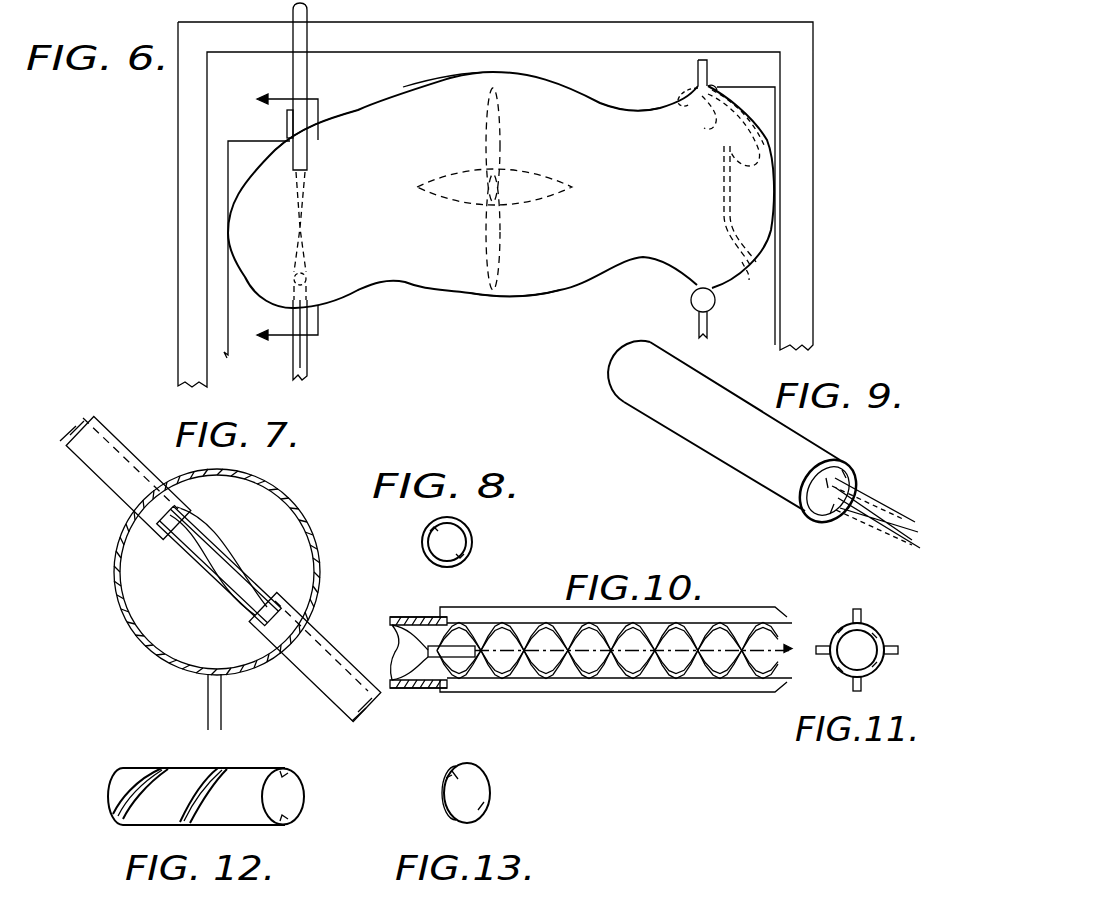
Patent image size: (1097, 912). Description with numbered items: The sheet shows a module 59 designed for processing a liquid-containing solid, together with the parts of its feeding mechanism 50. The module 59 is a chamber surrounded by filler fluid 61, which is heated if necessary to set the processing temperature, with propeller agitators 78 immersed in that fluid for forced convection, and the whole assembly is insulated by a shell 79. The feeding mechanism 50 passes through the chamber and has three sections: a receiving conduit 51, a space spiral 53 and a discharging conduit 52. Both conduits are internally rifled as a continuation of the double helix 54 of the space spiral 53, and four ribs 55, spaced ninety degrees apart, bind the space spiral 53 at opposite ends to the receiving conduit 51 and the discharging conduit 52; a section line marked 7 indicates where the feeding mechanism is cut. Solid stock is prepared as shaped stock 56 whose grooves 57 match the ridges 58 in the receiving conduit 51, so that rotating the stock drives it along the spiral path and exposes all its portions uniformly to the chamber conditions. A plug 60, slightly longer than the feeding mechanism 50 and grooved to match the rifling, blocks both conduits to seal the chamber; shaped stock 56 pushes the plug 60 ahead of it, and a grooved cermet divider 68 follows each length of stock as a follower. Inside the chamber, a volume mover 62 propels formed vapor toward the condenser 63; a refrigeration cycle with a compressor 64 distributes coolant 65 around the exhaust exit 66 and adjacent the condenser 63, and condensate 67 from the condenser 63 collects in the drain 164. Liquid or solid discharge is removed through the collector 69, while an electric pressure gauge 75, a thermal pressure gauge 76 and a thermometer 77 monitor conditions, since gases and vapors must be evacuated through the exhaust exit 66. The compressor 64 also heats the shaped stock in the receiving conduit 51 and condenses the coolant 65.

In FIG. 6, the section line 7- 7 is at (295, 226).
In FIG. 7, the feeding mechanism 50 is at (132, 446).
In FIG. 6, the receiving conduit 51 is at (292, 70).
In FIG. 7, the receiving conduit 51 is at (86, 482).
In FIG. 8, the receiving conduit 51 is at (462, 527).
In FIG. 9, the receiving conduit 51 is at (684, 438).
In FIG. 7, the discharging conduit 52 is at (292, 676).
In FIG. 7, the space spiral 53 is at (212, 570).
In FIG. 9, the double helix 54 is at (892, 520).
In FIG. 10, the double helix 54 is at (566, 672).
In FIG. 7, the ribs 55 is at (196, 522).
In FIG. 10, the ribs 55 is at (468, 614).
In FIG. 11, the ribs 55 is at (861, 612).
In FIG. 12, the shaped stock 56 is at (196, 771).
In FIG. 12, the grooves 57 is at (160, 770).
In FIG. 8, the ridges 58 is at (430, 528).
In FIG. 6, the module 59 is at (609, 93).
In FIG. 7, the plug 60 is at (66, 424).
In FIG. 10, the plug 60 is at (418, 652).
In FIG. 6, the filler fluid 61 is at (414, 88).
In FIG. 6, the volume mover 62 is at (500, 240).
In FIG. 6, the condenser 63 is at (722, 200).
In FIG. 6, the compressor 64 is at (287, 122).
In FIG. 6, the coolant 65 is at (739, 145).
In FIG. 6, the exhaust exit 66 is at (701, 117).
In FIG. 6, the condensate 67 is at (732, 260).
In FIG. 13, the cermet divider 68 is at (488, 782).
In FIG. 7, the collector 69 is at (208, 700).
In FIG. 6, the electric pressure gauge 75 is at (452, 177).
In FIG. 6, the thermal pressure gauge 76 is at (452, 206).
In FIG. 6, the thermometer 77 is at (452, 194).
In FIG. 6, the propeller agitators 78 is at (463, 194).
In FIG. 6, the shell 79 is at (178, 232).
In FIG. 13, the shell 79 is at (446, 778).
In FIG. 6, the drain 164 is at (710, 312).